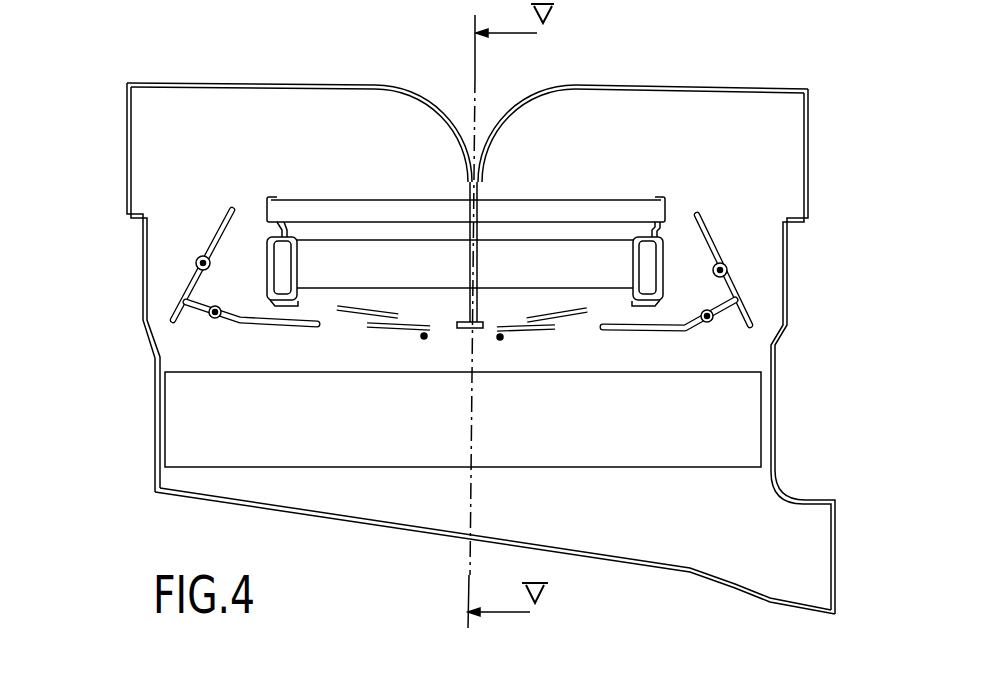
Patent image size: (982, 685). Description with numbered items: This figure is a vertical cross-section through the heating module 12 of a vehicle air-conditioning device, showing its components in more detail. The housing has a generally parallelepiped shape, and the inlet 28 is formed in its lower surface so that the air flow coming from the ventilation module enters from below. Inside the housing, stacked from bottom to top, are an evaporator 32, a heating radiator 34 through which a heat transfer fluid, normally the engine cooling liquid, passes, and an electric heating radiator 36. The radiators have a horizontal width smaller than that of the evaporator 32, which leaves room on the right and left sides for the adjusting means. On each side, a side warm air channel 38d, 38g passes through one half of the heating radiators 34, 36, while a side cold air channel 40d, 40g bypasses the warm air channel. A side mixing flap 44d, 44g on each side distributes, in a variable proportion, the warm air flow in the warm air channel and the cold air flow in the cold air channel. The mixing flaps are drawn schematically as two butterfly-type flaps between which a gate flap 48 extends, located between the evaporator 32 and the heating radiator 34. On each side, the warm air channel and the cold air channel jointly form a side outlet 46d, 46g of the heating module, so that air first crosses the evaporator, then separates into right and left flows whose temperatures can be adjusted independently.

The heating module 12 is at (467, 337).
The inlet 28 is at (680, 525).
The evaporator 32 is at (383, 440).
The heating radiator 34 is at (600, 268).
The electric heating radiator 36 is at (418, 212).
The left side warm air channel 38g is at (352, 232).
The right side warm air channel 38d is at (543, 233).
The left side cold air channel 40g is at (185, 242).
The right side cold air channel 40d is at (743, 245).
The left side mixing flap 44g is at (185, 281).
The right side mixing flap 44d is at (743, 281).
The left side outlet 46g is at (126, 141).
The right side outlet 46d is at (808, 140).
The gate flap 48 is at (543, 340).